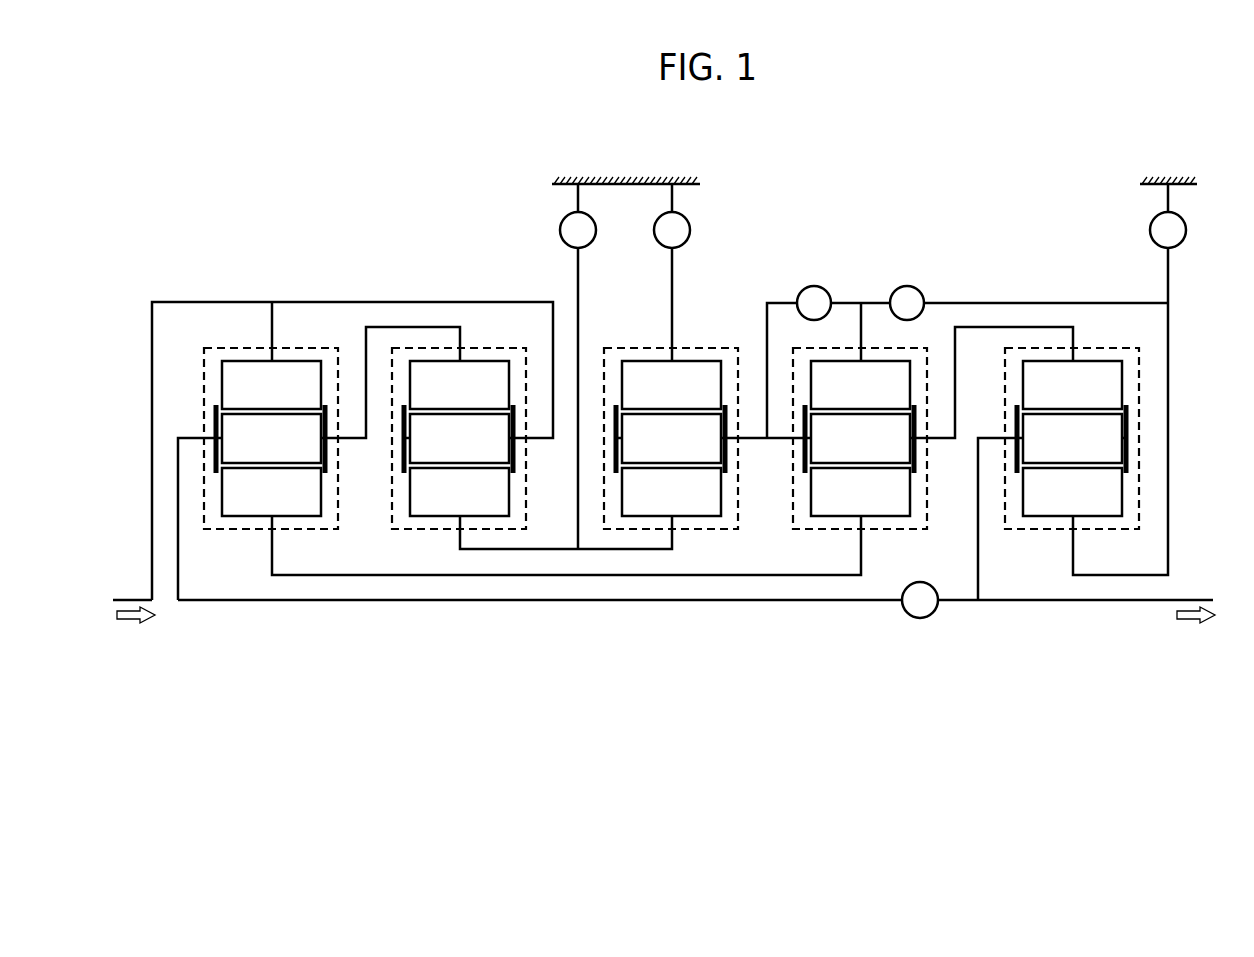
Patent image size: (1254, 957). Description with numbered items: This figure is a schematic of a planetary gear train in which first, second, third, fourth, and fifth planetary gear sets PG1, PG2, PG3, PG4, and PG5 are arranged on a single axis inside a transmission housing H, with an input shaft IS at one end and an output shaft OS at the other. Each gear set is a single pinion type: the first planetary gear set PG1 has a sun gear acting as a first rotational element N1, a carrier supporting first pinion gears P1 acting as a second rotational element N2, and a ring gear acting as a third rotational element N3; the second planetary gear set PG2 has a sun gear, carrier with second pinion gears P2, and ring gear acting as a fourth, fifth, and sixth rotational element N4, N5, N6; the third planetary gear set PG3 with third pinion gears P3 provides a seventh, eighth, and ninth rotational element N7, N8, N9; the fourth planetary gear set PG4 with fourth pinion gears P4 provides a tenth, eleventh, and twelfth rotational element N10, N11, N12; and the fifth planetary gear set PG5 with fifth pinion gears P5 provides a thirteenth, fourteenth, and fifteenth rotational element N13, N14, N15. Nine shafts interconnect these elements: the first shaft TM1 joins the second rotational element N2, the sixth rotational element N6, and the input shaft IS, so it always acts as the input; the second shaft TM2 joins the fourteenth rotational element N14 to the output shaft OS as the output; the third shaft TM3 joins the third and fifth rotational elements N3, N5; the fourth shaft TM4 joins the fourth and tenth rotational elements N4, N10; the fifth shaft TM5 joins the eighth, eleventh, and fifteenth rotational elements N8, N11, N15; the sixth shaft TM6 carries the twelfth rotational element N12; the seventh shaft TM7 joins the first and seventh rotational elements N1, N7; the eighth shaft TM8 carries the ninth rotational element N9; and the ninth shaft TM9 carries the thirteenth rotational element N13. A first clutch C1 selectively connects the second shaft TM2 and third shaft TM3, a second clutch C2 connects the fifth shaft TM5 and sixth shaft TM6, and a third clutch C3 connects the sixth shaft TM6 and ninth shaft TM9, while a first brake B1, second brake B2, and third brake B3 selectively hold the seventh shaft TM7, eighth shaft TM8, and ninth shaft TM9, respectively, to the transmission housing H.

The first shaft TM1 is at (343, 300).
The second shaft TM2 is at (980, 574).
The third shaft TM3 is at (411, 326).
The fourth shaft TM4 is at (512, 578).
The fifth shaft TM5 is at (1013, 326).
The sixth shaft TM6 is at (856, 300).
The seventh shaft TM7 is at (581, 275).
The eighth shaft TM8 is at (675, 275).
The ninth shaft TM9 is at (1171, 343).
The first planetary gear set PG1 is at (485, 510).
The second planetary gear set PG2 is at (297, 510).
The third planetary gear set PG3 is at (697, 510).
The fourth planetary gear set PG4 is at (886, 510).
The fifth planetary gear set PG5 is at (1114, 510).
The first rotational element N1 is at (459, 492).
The second rotational element N2 is at (516, 458).
The third rotational element N3 is at (459, 385).
The fourth rotational element N4 is at (271, 492).
The fifth rotational element N5 is at (328, 458).
The sixth rotational element N6 is at (271, 385).
The seventh rotational element N7 is at (671, 492).
The eighth rotational element N8 is at (728, 458).
The ninth rotational element N9 is at (671, 385).
The tenth rotational element N10 is at (860, 492).
The eleventh rotational element N11 is at (917, 458).
The twelfth rotational element N12 is at (860, 385).
The thirteenth rotational element N13 is at (1072, 492).
The fourteenth rotational element N14 is at (1129, 457).
The fifteenth rotational element N15 is at (1072, 385).
The first pinion gears P1 is at (459, 438).
The second pinion gears P2 is at (271, 438).
The third pinion gears P3 is at (671, 438).
The fourth pinion gears P4 is at (860, 438).
The fifth pinion gears P5 is at (1072, 438).
The first brake B1 is at (578, 230).
The second brake B2 is at (672, 230).
The third brake B3 is at (1168, 243).
The first clutch C1 is at (920, 600).
The second clutch C2 is at (799, 362).
The third clutch C3 is at (1029, 303).
The transmission housing H is at (629, 178).
The input shaft IS is at (128, 598).
The output shaft OS is at (1190, 598).